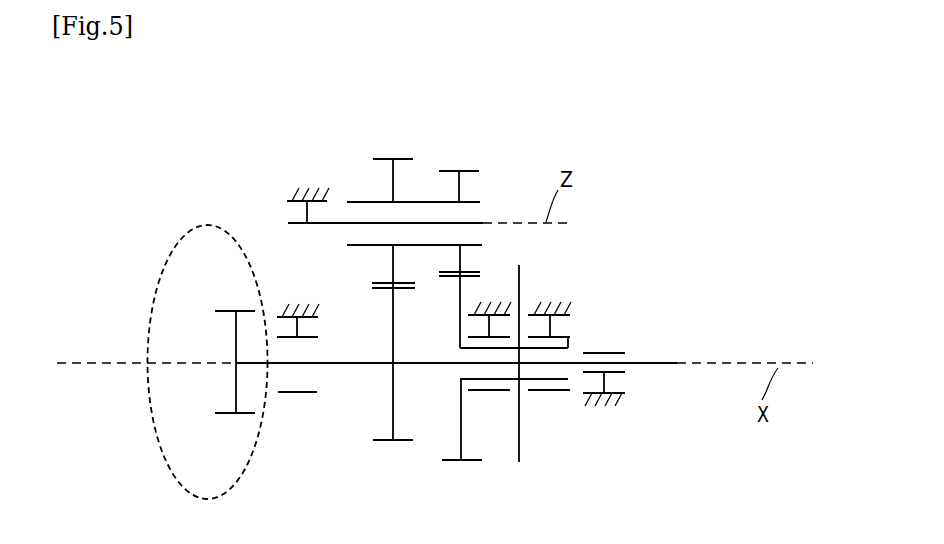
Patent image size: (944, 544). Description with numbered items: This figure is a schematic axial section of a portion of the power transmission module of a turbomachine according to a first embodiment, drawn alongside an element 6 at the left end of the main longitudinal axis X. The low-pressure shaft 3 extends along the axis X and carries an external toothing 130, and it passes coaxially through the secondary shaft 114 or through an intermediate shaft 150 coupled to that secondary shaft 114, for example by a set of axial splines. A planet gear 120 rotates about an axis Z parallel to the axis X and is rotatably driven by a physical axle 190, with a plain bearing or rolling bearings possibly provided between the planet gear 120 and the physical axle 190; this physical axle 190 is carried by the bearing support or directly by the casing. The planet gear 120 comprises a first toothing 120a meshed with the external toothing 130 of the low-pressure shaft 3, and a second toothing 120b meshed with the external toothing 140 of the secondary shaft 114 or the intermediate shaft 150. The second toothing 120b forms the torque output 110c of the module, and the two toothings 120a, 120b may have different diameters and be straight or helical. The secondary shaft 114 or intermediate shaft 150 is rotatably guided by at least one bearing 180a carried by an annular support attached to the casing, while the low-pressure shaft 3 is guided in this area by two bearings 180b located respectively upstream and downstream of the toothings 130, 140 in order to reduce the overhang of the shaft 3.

The low-pressure shaft 3 is at (656, 362).
The motor 6 is at (160, 277).
The torque output 110c is at (459, 186).
The secondary shaft 114 is at (522, 450).
The planet gear 120 is at (430, 155).
The first toothing 120a is at (393, 158).
The second toothing 120b is at (489, 158).
The external toothing 130 is at (390, 442).
The external toothing 140 is at (462, 462).
The intermediate shaft 150 is at (570, 340).
The bearing 180a is at (493, 302).
The bearings 180b is at (303, 395).
The physical axle 190 is at (322, 225).